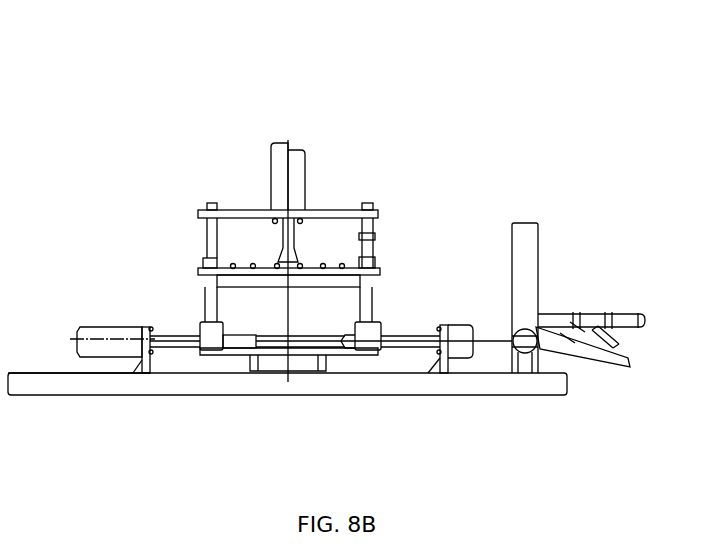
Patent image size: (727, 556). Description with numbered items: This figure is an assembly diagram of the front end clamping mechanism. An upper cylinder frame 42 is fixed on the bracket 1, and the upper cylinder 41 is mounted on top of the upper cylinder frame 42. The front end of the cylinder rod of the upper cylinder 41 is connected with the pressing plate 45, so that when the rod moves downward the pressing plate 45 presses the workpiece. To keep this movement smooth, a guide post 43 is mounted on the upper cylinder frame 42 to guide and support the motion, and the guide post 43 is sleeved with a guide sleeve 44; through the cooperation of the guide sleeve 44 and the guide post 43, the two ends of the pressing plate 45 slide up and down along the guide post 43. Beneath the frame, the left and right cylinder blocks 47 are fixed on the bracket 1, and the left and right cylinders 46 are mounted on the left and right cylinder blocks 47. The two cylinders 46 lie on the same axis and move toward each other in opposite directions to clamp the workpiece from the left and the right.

The bracket 1 is at (453, 387).
The upper cylinder 41 is at (297, 152).
The upper cylinder frame 42 is at (342, 213).
The guide post 43 is at (366, 236).
The guide sleeve 44 is at (368, 258).
The pressing plate 45 is at (223, 281).
The left and right cylinders 46 is at (103, 339).
The left and right cylinder blocks 47 is at (35, 370).